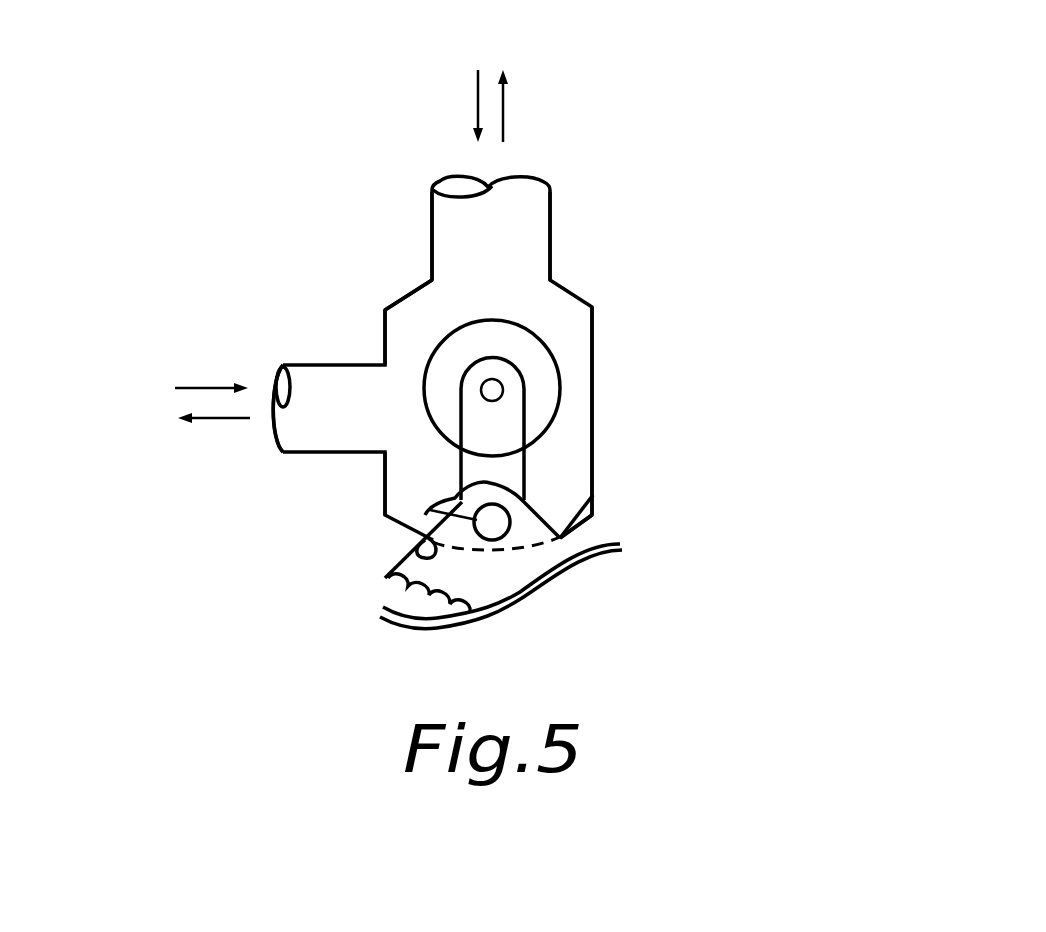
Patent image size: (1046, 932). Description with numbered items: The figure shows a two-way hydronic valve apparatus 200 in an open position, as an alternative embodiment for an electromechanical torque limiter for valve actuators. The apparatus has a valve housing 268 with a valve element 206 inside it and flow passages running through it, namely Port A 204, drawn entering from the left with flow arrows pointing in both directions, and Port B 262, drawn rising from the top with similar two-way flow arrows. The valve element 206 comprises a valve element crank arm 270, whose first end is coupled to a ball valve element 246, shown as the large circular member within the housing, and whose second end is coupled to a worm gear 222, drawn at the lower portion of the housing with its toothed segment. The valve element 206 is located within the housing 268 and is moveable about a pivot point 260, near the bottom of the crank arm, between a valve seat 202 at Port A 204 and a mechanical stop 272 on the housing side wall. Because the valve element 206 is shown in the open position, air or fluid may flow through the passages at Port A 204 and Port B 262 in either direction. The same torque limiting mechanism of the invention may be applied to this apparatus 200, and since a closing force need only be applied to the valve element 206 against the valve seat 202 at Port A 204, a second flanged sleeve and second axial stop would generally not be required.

The two-way hydronic valve apparatus 200 is at (479, 324).
The valve seat 202 is at (382, 361).
The Port A 204 is at (275, 378).
The valve element 206 is at (565, 328).
The worm gear 222 is at (593, 504).
The ball valve element 246 is at (533, 332).
The pivot point 260 is at (413, 556).
The Port B 262 is at (537, 140).
The valve housing 268 is at (417, 290).
The valve element crank arm 270 is at (460, 477).
The mechanical stop 272 is at (595, 405).